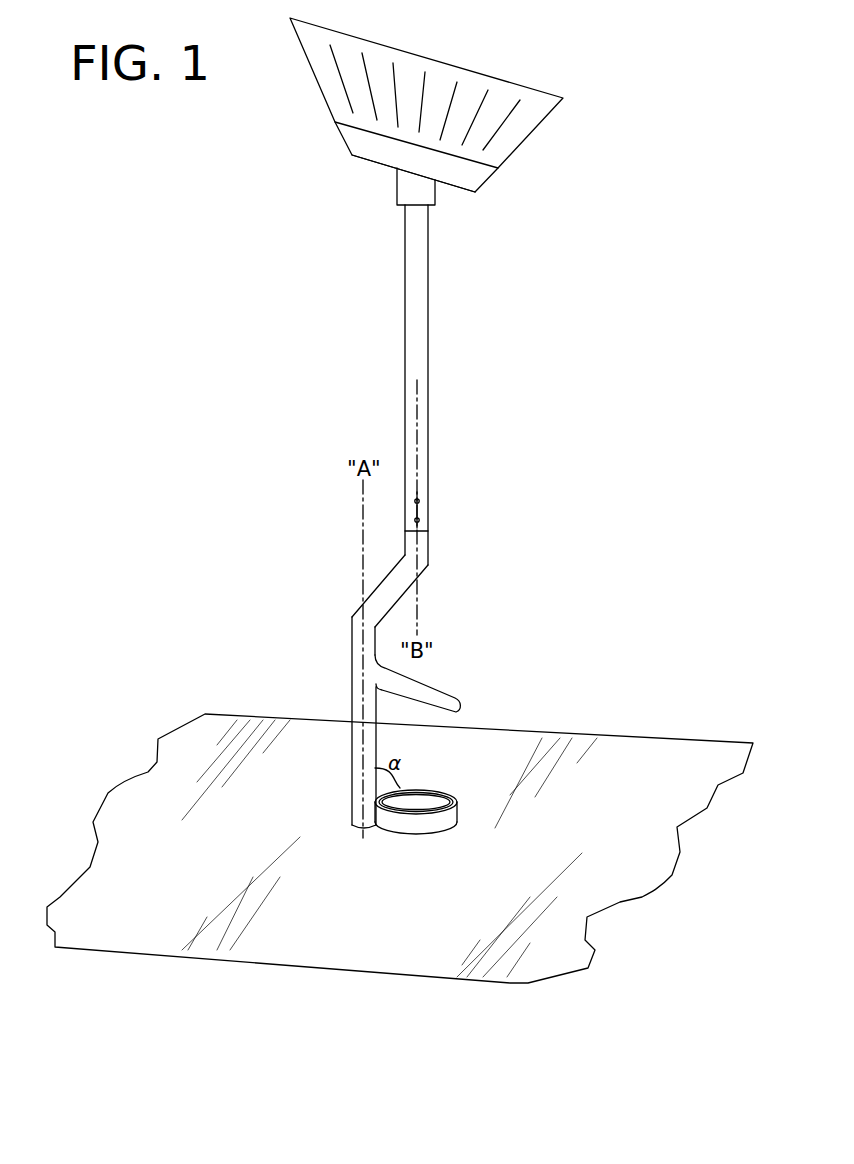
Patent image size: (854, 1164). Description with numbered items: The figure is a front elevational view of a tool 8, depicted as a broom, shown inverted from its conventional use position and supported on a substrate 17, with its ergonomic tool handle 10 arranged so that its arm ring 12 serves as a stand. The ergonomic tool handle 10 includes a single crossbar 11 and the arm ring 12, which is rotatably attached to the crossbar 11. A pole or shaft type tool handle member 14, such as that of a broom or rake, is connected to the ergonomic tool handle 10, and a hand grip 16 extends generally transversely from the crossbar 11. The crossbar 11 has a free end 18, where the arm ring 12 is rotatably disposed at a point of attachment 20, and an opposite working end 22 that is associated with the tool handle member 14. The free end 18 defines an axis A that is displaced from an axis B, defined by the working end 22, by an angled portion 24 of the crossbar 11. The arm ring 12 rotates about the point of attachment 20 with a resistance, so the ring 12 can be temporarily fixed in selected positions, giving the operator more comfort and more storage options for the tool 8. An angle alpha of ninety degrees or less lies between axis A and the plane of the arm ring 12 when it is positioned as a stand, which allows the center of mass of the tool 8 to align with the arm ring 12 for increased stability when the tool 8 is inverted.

The tool 8 is at (200, 297).
The ergonomic tool handle 10 is at (283, 668).
The single crossbar 11 is at (355, 627).
The arm ring 12 is at (452, 817).
The tool handle member 14 is at (422, 363).
The hand grip 16 is at (442, 698).
The substrate 17 is at (203, 937).
The free end 18 is at (358, 815).
The point of attachment 20 is at (375, 810).
The working end 22 is at (422, 542).
The angled portion 24 is at (390, 592).